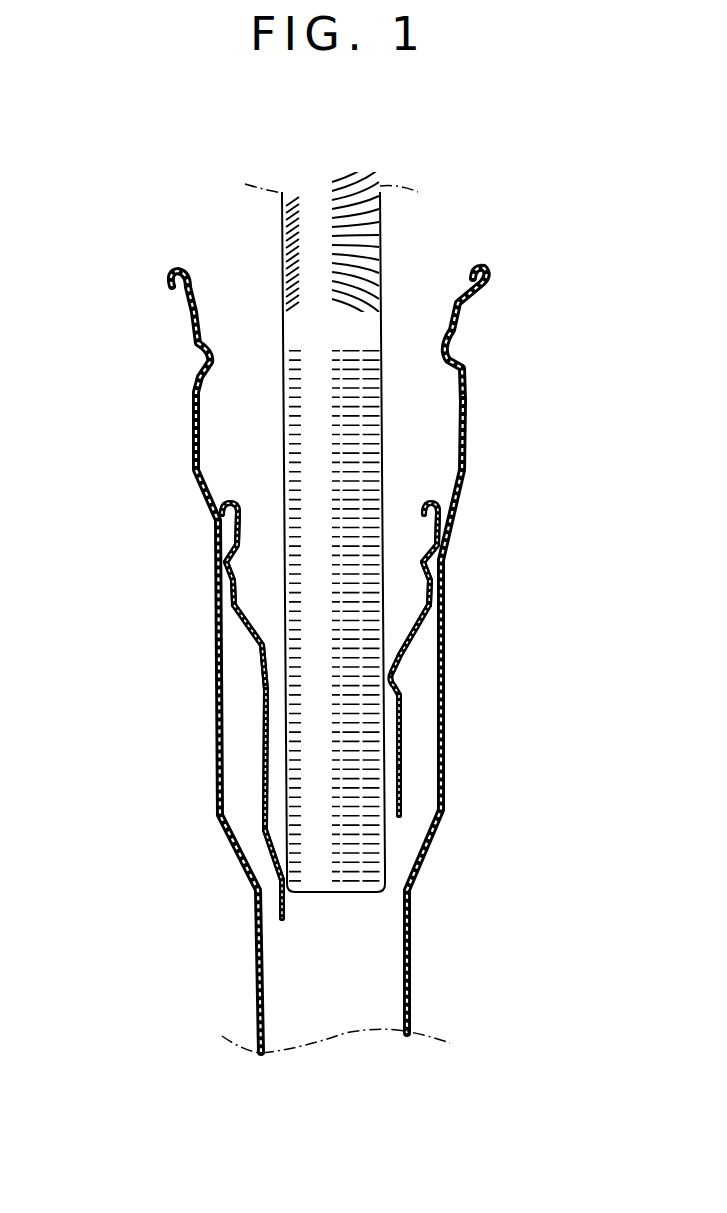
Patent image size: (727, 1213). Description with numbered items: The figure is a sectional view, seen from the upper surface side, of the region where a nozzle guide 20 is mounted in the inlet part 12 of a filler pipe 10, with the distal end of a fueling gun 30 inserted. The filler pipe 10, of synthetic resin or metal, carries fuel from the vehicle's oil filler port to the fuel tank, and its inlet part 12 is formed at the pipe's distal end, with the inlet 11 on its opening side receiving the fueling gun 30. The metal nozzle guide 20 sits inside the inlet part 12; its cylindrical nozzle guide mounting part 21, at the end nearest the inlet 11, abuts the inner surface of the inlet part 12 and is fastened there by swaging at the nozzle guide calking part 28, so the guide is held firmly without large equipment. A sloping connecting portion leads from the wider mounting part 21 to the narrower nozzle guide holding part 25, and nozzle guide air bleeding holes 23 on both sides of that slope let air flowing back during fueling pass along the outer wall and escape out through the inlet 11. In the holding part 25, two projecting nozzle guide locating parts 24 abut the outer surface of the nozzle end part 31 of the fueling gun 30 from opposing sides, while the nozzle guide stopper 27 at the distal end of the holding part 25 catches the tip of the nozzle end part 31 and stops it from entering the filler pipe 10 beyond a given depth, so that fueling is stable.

The filler pipe 10 is at (172, 389).
The inlet 11 is at (476, 266).
The inlet part 12 is at (445, 735).
The nozzle guide 20 is at (240, 769).
The nozzle guide mounting part 21 is at (437, 517).
The nozzle guide air bleeding holes 23 is at (244, 620).
The nozzle guide locating parts 24 is at (270, 681).
The nozzle guide holding part 25 is at (403, 782).
The nozzle guide stopper 27 is at (284, 905).
The nozzle guide calking part 28 is at (228, 566).
The fueling gun 30 is at (262, 231).
The nozzle end part 31 is at (344, 876).